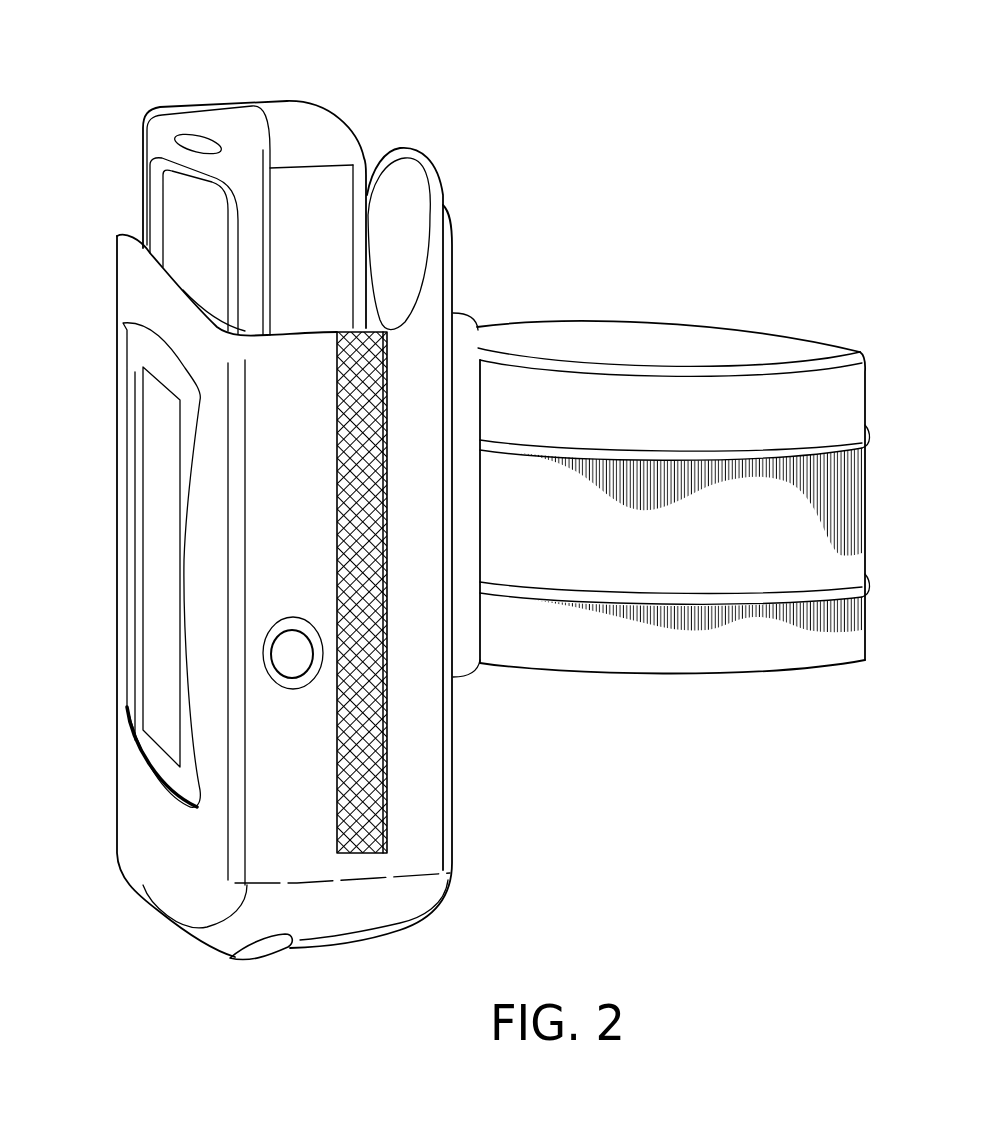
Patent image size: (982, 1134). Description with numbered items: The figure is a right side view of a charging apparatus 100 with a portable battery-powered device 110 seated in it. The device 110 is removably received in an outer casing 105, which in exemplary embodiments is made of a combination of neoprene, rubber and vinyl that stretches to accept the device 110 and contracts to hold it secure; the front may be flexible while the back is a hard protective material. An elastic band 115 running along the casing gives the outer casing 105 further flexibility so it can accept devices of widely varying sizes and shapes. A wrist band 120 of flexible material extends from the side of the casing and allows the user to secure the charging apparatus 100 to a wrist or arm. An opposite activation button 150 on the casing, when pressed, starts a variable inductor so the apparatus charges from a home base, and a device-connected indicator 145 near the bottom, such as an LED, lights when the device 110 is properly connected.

The charging apparatus 100 is at (567, 113).
The outer casing 105 is at (150, 288).
The portable battery-powered device 110 is at (265, 115).
The elastic band 115 is at (373, 758).
The wrist band 120 is at (627, 387).
The device-connected indicator 145 is at (250, 962).
The opposite activation button 150 is at (302, 655).